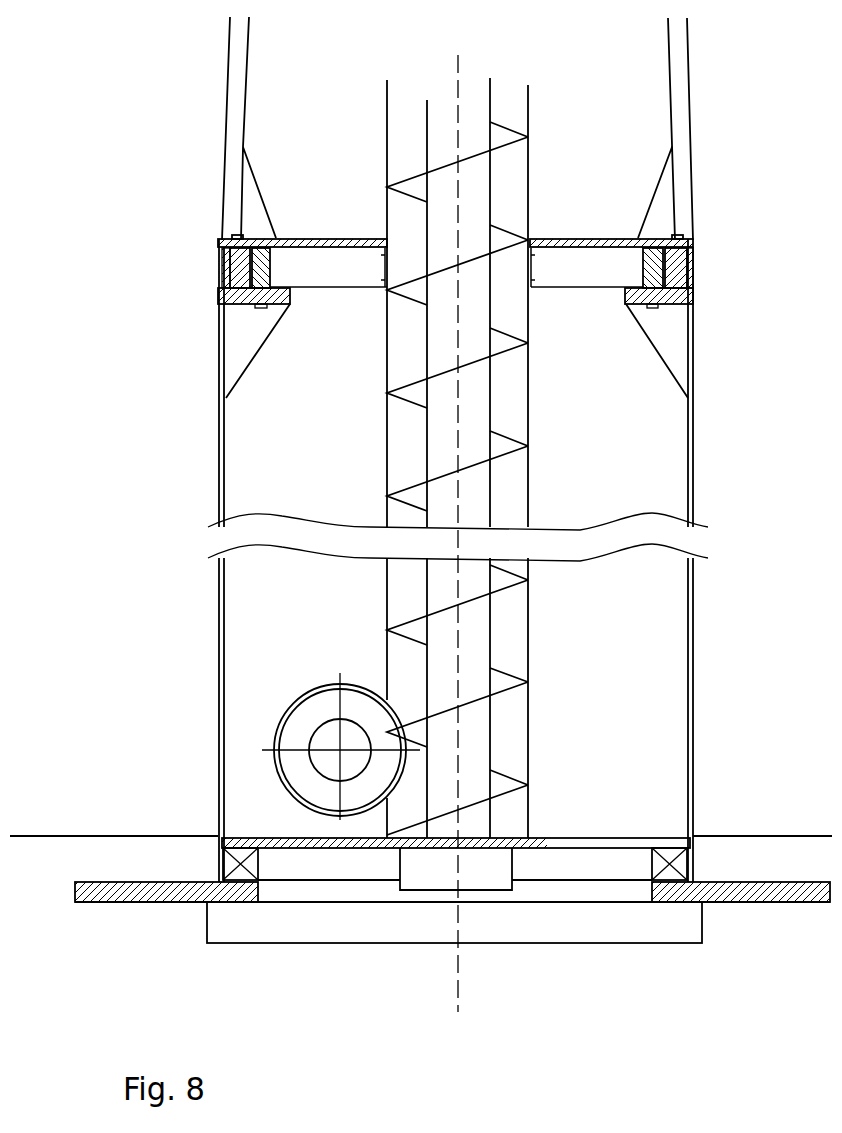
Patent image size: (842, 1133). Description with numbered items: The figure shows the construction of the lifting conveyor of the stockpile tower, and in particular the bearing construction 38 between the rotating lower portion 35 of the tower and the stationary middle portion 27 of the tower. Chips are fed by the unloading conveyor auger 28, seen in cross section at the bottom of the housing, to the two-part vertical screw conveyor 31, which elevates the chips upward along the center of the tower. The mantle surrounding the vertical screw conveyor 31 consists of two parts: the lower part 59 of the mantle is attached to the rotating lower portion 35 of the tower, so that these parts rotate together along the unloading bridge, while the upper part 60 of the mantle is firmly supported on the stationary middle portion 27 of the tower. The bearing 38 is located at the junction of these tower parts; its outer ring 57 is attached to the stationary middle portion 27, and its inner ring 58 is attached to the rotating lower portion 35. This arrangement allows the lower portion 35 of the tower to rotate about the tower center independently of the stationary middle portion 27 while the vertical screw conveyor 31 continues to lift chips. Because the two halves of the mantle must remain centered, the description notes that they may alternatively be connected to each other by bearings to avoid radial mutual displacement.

The stationary middle portion of the tower 27 is at (678, 100).
The unloading conveyor auger 28 is at (305, 717).
The vertical screw conveyor 31 is at (475, 425).
The lower portion of the tower 35 is at (663, 473).
The bearing 38 is at (250, 268).
The outer ring of the bearing 57 is at (690, 263).
The inner ring of the bearing 58 is at (698, 298).
The lower part of the mantle 59 is at (530, 483).
The upper part of the mantle 60 is at (530, 178).